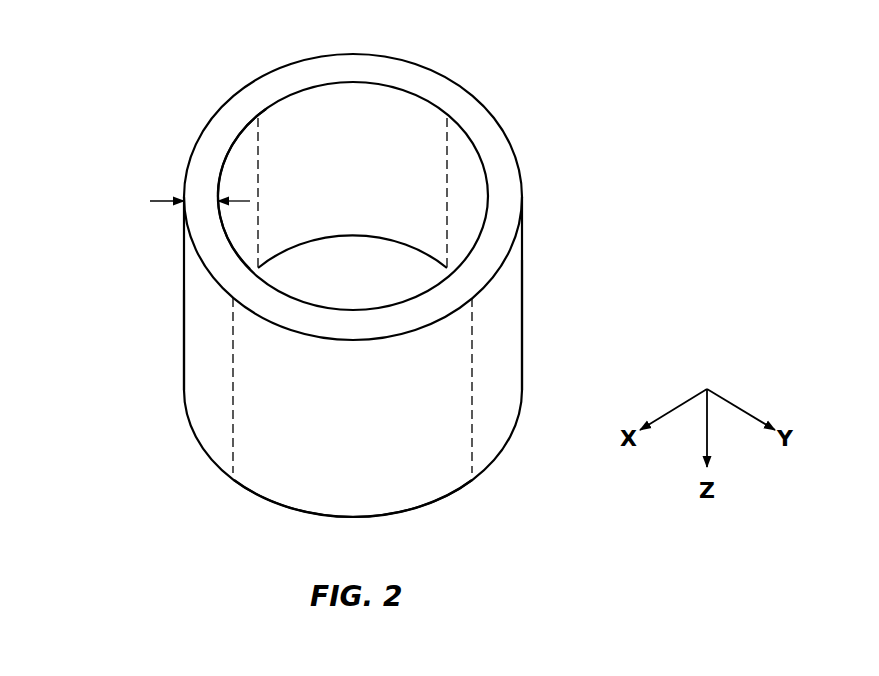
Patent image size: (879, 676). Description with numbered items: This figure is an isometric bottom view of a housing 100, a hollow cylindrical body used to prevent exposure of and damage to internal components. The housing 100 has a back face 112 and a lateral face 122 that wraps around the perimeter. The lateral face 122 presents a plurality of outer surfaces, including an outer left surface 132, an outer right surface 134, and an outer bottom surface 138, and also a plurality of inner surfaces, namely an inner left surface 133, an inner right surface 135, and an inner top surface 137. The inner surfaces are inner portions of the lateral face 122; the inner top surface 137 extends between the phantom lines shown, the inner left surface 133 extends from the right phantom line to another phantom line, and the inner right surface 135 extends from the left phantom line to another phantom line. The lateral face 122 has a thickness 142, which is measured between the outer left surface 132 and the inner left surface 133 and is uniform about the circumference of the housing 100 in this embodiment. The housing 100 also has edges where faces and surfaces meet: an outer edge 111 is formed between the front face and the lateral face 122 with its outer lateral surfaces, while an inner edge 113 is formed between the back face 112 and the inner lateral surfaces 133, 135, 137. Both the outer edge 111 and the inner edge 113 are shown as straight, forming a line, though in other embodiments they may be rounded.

The housing 100 is at (349, 290).
The outer edge 111 is at (228, 100).
The back face 112 is at (362, 262).
The inner edge 113 is at (447, 180).
The lateral face 122 is at (409, 423).
The outer left surface 132 is at (497, 301).
The inner left surface 133 is at (243, 193).
The outer right surface 134 is at (182, 322).
The inner right surface 135 is at (243, 250).
The inner top surface 137 is at (272, 145).
The outer bottom surface 138 is at (445, 383).
The thickness 142 is at (163, 199).